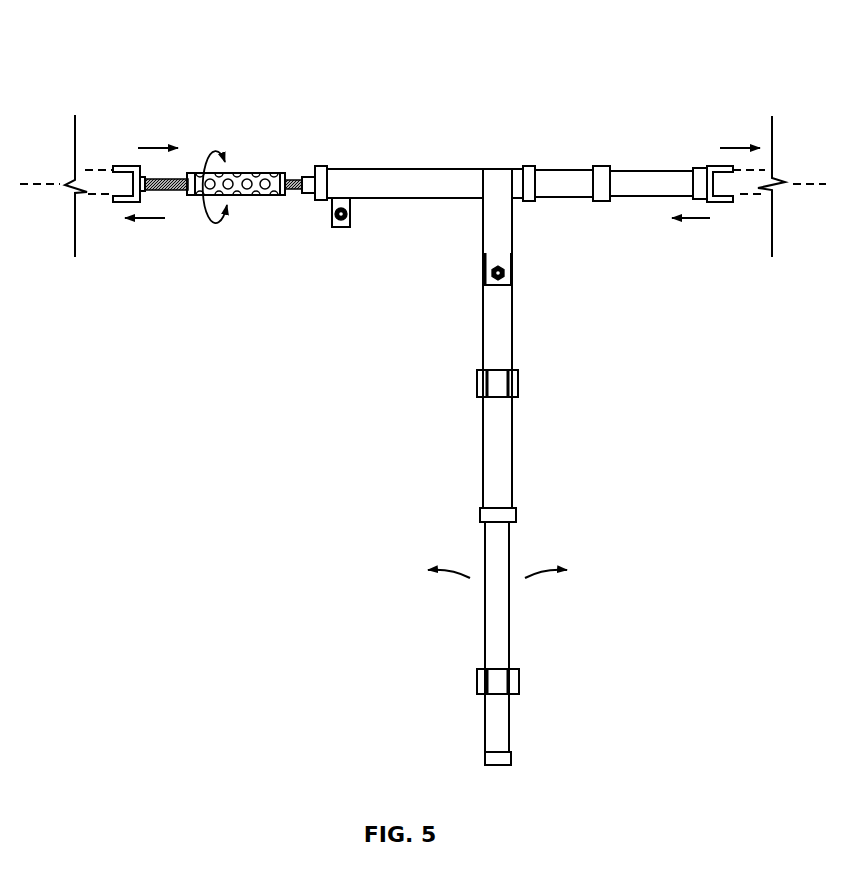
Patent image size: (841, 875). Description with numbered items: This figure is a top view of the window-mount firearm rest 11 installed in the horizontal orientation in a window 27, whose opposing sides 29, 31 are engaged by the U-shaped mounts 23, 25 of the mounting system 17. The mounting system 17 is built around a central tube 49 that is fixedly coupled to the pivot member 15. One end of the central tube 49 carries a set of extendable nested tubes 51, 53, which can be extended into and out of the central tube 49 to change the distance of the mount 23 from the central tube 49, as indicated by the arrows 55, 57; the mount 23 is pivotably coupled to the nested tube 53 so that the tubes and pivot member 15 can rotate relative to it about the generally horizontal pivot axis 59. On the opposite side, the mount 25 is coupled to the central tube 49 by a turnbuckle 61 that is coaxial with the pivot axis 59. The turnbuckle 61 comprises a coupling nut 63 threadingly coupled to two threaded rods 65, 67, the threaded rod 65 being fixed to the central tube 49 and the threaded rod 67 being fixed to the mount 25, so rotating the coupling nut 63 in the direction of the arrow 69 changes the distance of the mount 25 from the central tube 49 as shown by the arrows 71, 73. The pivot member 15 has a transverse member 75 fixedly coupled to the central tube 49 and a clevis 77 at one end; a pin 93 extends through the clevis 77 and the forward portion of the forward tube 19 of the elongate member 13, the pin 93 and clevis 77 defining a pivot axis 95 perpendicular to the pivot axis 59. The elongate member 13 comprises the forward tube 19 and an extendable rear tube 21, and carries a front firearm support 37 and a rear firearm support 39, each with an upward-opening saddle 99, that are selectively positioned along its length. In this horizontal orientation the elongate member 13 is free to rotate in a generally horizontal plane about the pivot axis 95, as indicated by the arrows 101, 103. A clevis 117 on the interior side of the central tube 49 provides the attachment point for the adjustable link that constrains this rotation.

The window-mount firearm rest 11 is at (590, 60).
The elongate member 13 is at (499, 434).
The pivot member 15 is at (496, 186).
The mounting system 17 is at (247, 189).
The forward tube 19 is at (508, 432).
The rear tube 21 is at (488, 643).
The mount 23 is at (710, 166).
The mount 25 is at (116, 165).
The window 27 is at (86, 166).
The side of window 29 is at (747, 197).
The side of window 31 is at (98, 197).
The front firearm support 37 is at (521, 383).
The rear firearm support 39 is at (521, 680).
The central tube 49 is at (388, 169).
The nested tube 51 is at (547, 172).
The nested tube 53 is at (624, 178).
The arrow 55 is at (743, 146).
The arrow 57 is at (694, 222).
The pivot axis 59 is at (823, 187).
The turnbuckle 61 is at (247, 153).
The coupling nut 63 is at (267, 181).
The threaded rod 65 is at (296, 191).
The threaded rod 67 is at (172, 191).
The arrow 69 is at (213, 148).
The arrow 71 is at (143, 146).
The arrow 73 is at (146, 222).
The transverse member 75 is at (496, 219).
The clevis 77 is at (488, 237).
The pin 93 is at (505, 276).
The pivot axis 95 is at (490, 279).
The saddle 99 is at (477, 389).
The arrow 101 is at (543, 580).
The arrow 103 is at (456, 580).
The clevis 117 is at (345, 228).